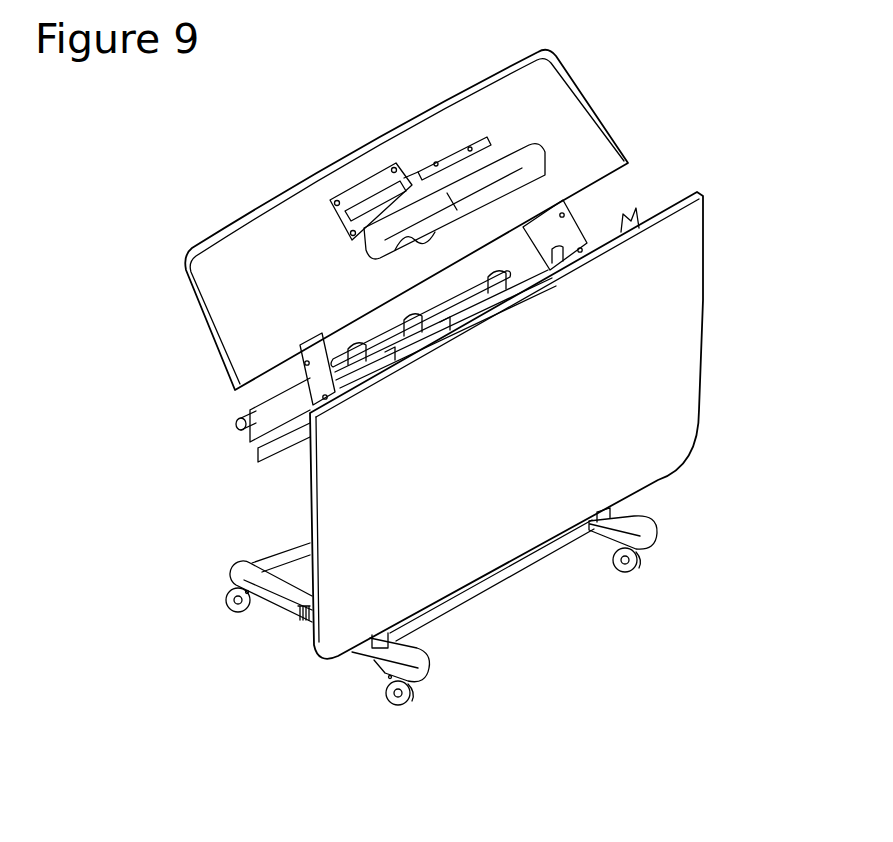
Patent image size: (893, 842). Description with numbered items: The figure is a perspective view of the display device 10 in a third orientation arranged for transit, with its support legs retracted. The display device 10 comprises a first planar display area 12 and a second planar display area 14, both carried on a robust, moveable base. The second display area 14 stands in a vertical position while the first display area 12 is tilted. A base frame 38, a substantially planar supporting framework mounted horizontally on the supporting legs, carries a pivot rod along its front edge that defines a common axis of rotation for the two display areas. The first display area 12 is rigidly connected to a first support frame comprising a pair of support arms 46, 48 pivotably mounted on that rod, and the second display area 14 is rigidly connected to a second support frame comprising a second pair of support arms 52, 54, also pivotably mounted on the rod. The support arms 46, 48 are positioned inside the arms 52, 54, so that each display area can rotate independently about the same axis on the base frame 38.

The display device 10 is at (318, 123).
The first planar display area 12 is at (563, 107).
The second planar display area 14 is at (676, 343).
The base frame 38 is at (290, 415).
The support arm 46 is at (300, 366).
The support arm 48 is at (563, 232).
The support arm 52 is at (373, 387).
The support arm 54 is at (630, 218).